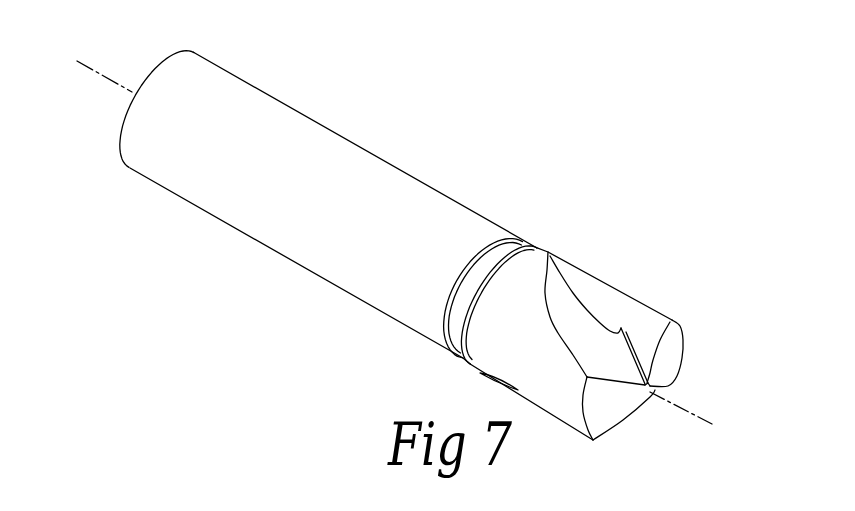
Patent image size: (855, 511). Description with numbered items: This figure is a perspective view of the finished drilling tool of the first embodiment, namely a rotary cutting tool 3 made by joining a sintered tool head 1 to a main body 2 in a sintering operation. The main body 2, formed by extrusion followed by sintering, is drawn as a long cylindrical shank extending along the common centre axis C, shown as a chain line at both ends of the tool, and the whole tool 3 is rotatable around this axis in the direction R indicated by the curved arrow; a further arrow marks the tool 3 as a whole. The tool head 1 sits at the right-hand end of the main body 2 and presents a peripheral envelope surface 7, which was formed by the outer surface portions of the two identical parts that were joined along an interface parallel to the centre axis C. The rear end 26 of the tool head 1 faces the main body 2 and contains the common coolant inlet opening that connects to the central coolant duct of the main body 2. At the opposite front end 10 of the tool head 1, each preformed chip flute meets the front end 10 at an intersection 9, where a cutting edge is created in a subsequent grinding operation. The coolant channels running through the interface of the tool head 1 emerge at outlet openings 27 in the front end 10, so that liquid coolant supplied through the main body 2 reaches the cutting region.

The tool head 1 is at (610, 307).
The main body 2 is at (318, 140).
The rotary cutting tool 3 is at (461, 135).
The peripheral envelope surface 7 is at (502, 345).
The intersection 9 is at (667, 341).
The front end 10 is at (650, 386).
The rear end 26 is at (512, 257).
The outlet openings 27 is at (670, 375).
The direction of rotation R is at (457, 212).
The centre axis C is at (688, 418).